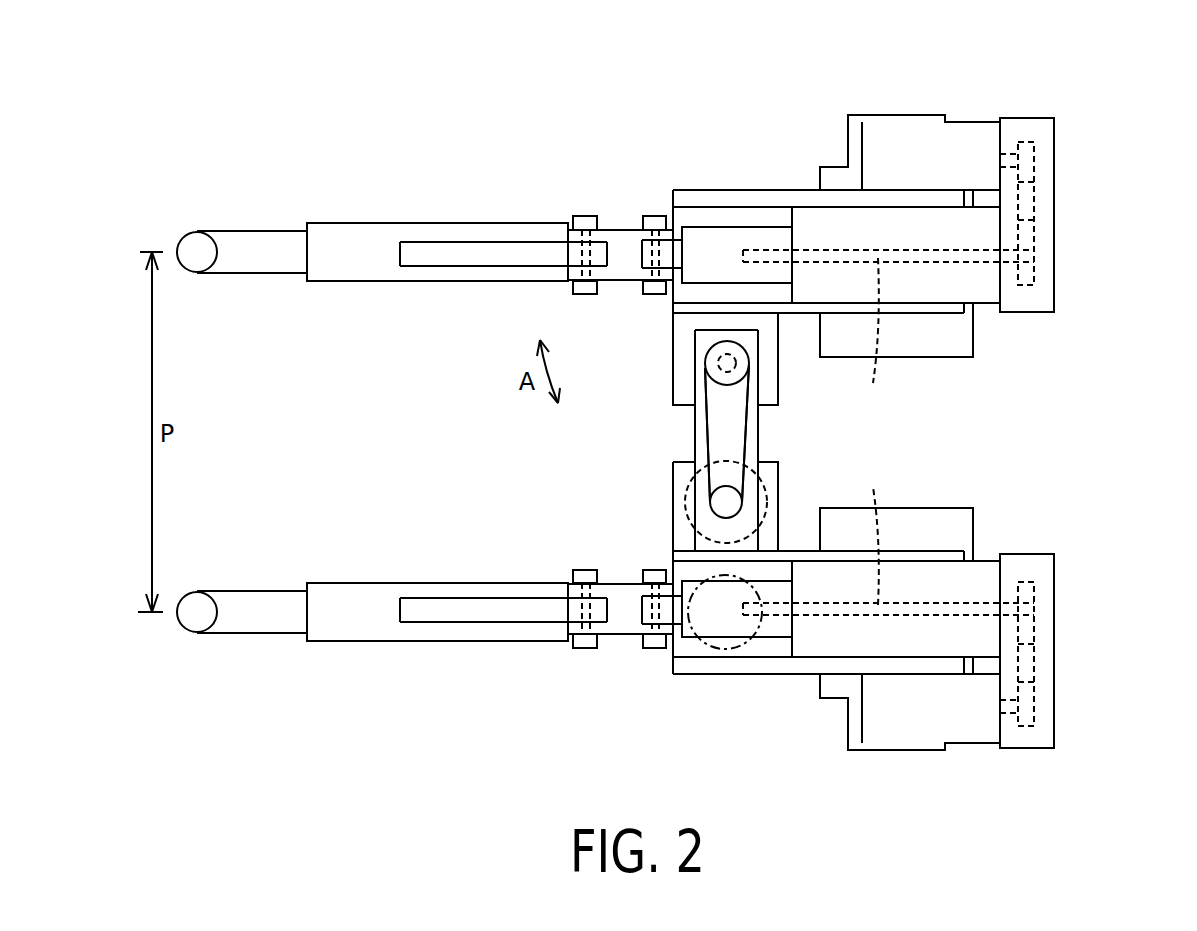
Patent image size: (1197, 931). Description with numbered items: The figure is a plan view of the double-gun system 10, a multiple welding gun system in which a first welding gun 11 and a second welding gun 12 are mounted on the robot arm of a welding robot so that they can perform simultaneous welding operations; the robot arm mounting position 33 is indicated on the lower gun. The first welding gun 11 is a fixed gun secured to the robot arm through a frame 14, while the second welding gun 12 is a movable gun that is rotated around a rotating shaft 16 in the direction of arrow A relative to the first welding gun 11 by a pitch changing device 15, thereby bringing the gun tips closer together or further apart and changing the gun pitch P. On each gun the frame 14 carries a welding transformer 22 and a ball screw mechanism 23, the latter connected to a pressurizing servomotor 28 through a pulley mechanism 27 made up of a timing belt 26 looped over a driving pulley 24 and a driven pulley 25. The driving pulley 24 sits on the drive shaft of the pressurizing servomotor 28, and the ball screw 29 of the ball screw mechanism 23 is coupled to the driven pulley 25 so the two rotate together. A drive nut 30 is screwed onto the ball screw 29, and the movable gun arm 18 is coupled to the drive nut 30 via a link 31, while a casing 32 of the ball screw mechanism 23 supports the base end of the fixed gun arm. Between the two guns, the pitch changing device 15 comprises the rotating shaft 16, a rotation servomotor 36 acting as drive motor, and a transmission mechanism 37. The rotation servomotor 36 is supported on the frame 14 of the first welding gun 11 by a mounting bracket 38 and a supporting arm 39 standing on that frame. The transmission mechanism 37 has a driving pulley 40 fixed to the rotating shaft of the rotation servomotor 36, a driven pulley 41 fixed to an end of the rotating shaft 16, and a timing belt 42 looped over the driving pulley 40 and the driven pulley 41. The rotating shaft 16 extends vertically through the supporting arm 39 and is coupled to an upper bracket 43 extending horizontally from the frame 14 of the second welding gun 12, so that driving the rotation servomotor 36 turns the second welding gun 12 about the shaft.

The double-gun system 10 is at (790, 56).
The first welding gun 11 is at (958, 498).
The second welding gun 12 is at (996, 99).
The frame 14 is at (752, 190).
The pitch changing device 15 is at (558, 480).
The rotating shaft 16 is at (705, 365).
The movable gun arm 18 is at (345, 223).
The welding transformer 22 is at (973, 335).
The ball screw mechanism 23 is at (975, 275).
The driving pulley 24 is at (1035, 155).
The driven pulley 25 is at (1054, 250).
The timing belt 26 is at (1035, 202).
The pulley mechanism 27 is at (1054, 175).
The pressurizing servomotor 28 is at (923, 148).
The ball screw 29 is at (875, 431).
The drive nut 30 is at (706, 227).
The link 31 is at (620, 216).
The casing 32 is at (986, 432).
The robot arm mounting position 33 is at (715, 650).
The rotation servomotor 36 is at (768, 491).
The transmission mechanism 37 is at (604, 415).
The mounting bracket 38 is at (673, 527).
The supporting arm 39 is at (750, 367).
The driving pulley 40 is at (716, 511).
The driven pulley 41 is at (717, 382).
The timing belt 42 is at (706, 458).
The upper bracket 43 is at (673, 397).